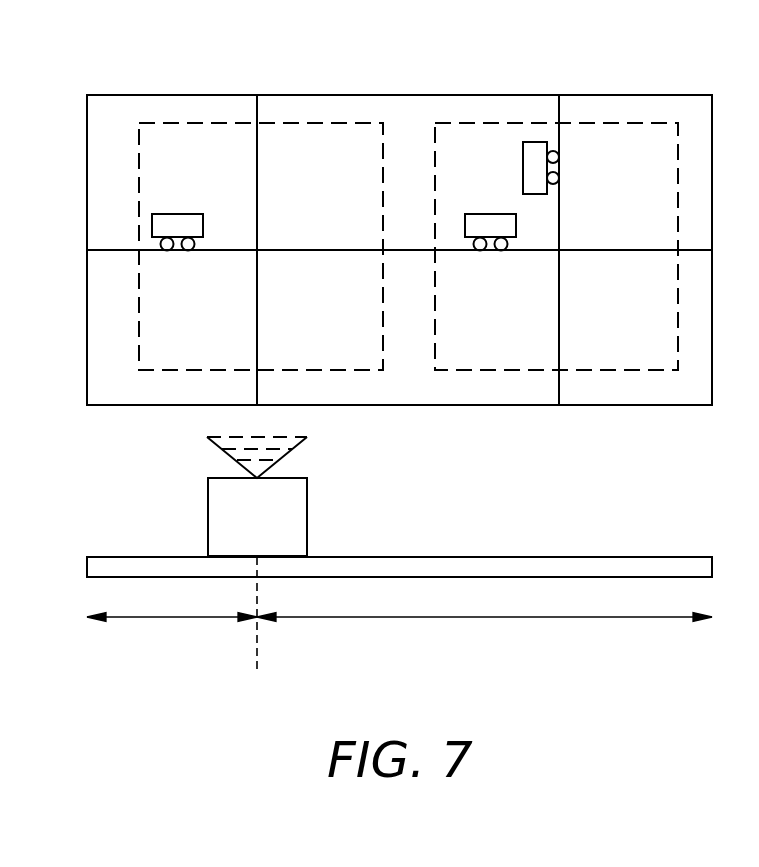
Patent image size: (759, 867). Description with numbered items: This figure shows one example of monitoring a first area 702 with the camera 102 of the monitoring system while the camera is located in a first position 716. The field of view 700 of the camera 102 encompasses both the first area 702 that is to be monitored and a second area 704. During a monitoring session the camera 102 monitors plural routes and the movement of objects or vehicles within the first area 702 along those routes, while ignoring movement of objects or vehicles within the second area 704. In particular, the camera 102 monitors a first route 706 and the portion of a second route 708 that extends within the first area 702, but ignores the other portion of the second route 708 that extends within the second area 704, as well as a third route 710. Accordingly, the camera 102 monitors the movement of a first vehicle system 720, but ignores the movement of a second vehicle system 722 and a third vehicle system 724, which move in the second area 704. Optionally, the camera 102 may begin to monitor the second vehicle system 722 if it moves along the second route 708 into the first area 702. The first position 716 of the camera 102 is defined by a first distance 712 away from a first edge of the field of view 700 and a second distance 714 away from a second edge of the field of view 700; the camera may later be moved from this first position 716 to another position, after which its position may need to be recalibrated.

The field of view 700 is at (653, 95).
The first area 702 is at (317, 123).
The second area 704 is at (504, 123).
The first route 706 is at (257, 152).
The second route 708 is at (645, 250).
The third route 710 is at (559, 316).
The first vehicle system 720 is at (178, 214).
The second vehicle system 722 is at (483, 214).
The third vehicle system 724 is at (533, 142).
The camera 102 is at (208, 516).
The first distance 712 is at (177, 617).
The second distance 714 is at (519, 617).
The first position 716 is at (258, 649).